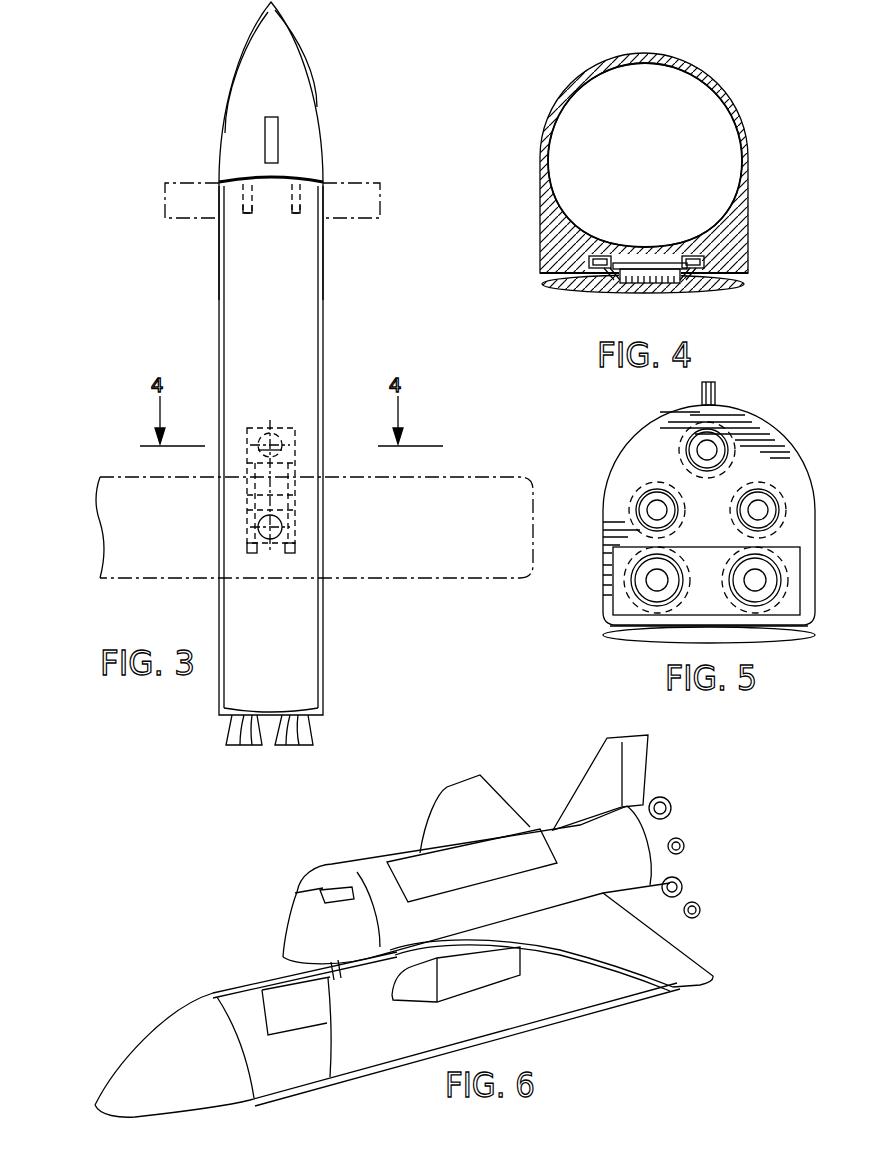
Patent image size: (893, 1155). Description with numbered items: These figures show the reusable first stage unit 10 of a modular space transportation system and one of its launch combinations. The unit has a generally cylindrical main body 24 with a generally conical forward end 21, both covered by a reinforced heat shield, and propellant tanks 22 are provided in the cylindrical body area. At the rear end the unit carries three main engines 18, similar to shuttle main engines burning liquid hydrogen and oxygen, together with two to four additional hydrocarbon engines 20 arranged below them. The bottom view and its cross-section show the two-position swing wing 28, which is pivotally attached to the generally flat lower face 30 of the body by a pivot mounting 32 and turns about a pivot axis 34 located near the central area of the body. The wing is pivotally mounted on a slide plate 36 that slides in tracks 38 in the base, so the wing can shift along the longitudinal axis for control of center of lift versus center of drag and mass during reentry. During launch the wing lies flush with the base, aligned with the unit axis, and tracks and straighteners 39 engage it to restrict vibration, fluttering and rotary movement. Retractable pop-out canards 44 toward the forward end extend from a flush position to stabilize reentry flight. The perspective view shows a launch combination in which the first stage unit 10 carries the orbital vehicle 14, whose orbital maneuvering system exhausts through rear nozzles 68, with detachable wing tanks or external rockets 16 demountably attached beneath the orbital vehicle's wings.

In FIG. 3, the first stage unit 10 is at (205, 120).
In FIG. 6, the first stage unit 10 is at (192, 986).
In FIG. 6, the orbital vehicle 14 is at (272, 929).
In FIG. 6, the detachable wing tanks or external rockets 16 is at (302, 866).
In FIG. 5, the main engines 18 is at (697, 448).
In FIG. 3, the additional engines 20 is at (243, 738).
In FIG. 5, the additional engines 20 is at (672, 582).
In FIG. 3, the forward end 21 is at (293, 27).
In FIG. 4, the propellant tanks 22 is at (677, 134).
In FIG. 3, the main body 24 is at (326, 168).
In FIG. 4, the main body 24 is at (680, 63).
In FIG. 5, the main body 24 is at (657, 421).
In FIG. 3, the swing wing 28 is at (232, 302).
In FIG. 4, the swing wing 28 is at (578, 291).
In FIG. 5, the swing wing 28 is at (772, 638).
In FIG. 4, the lower face 30 is at (541, 276).
In FIG. 5, the lower face 30 is at (637, 629).
In FIG. 3, the pivot mounting 32 is at (264, 428).
In FIG. 4, the pivot mounting 32 is at (648, 266).
In FIG. 3, the pivot axis 34 is at (262, 447).
In FIG. 3, the slide plate 36 is at (300, 448).
In FIG. 4, the slide plate 36 is at (700, 271).
In FIG. 3, the tracks 38 is at (247, 495).
In FIG. 4, the tracks 38 is at (601, 256).
In FIG. 3, the tracks and straighteners 39 is at (252, 217).
In FIG. 3, the retractable pop-out canards 44 is at (166, 182).
In FIG. 6, the nozzles 68 is at (680, 808).